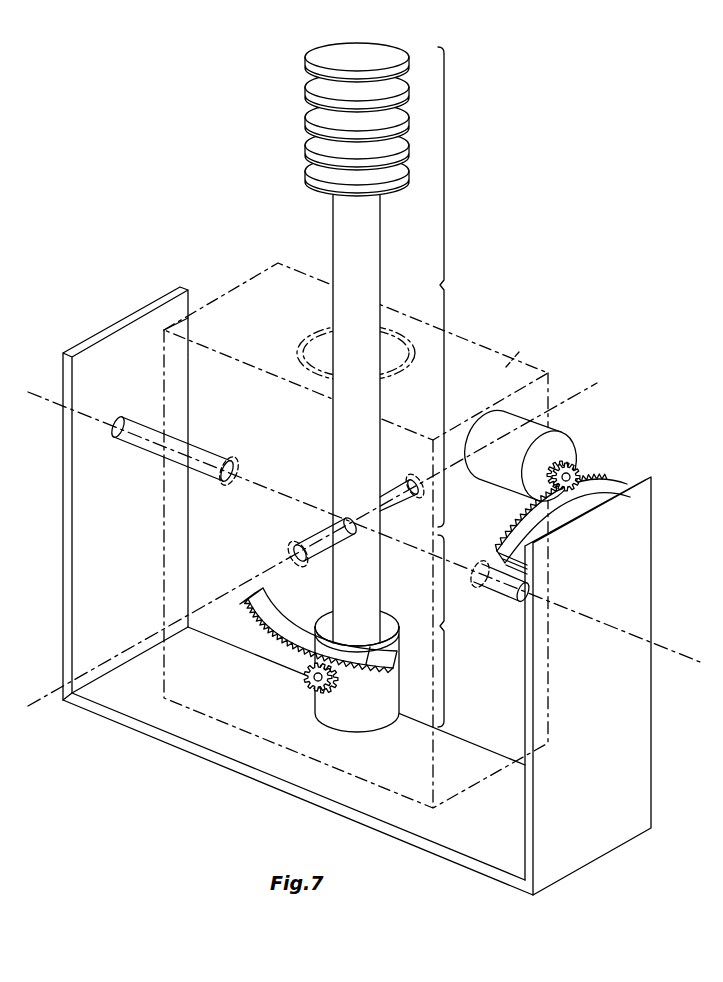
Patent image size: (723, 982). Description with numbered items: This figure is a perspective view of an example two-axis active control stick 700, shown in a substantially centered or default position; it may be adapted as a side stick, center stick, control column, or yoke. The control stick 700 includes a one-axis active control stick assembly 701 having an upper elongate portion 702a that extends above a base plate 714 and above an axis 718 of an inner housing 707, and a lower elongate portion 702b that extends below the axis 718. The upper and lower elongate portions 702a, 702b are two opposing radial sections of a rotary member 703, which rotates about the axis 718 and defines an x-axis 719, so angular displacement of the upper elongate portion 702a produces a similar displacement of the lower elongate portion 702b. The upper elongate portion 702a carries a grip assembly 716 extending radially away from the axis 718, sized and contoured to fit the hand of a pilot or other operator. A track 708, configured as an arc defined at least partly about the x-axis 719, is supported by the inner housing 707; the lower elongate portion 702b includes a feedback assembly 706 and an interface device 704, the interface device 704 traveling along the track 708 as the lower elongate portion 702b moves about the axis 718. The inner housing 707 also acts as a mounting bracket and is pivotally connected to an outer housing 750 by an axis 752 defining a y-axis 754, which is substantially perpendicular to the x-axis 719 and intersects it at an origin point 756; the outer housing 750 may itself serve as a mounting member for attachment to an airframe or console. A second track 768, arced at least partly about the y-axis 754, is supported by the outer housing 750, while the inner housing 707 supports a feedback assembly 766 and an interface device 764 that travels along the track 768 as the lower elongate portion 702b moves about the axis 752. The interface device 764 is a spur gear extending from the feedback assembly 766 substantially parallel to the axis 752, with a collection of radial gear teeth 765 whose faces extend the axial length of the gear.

The two-axis active control stick 700 is at (173, 150).
The one-axis active control stick assembly 701 is at (318, 245).
The upper elongate portion 702a is at (469, 287).
The lower elongate portion 702b is at (469, 631).
The rotary member 703 is at (340, 208).
The interface device 704 is at (313, 684).
The feedback assembly 706 is at (377, 711).
The inner housing 707 is at (472, 338).
The track 708 is at (290, 646).
The base plate 714 is at (521, 351).
The grip assembly 716 is at (312, 89).
The axis 718 is at (391, 493).
The x-axis 719 is at (592, 387).
The outer housing 750 is at (103, 323).
The axis 752 is at (207, 449).
The y-axis 754 is at (565, 622).
The origin point 756 is at (356, 520).
The interface device 764 is at (587, 497).
The radial gear teeth 765 is at (587, 462).
The feedback assembly 766 is at (577, 465).
The track 768 is at (569, 503).